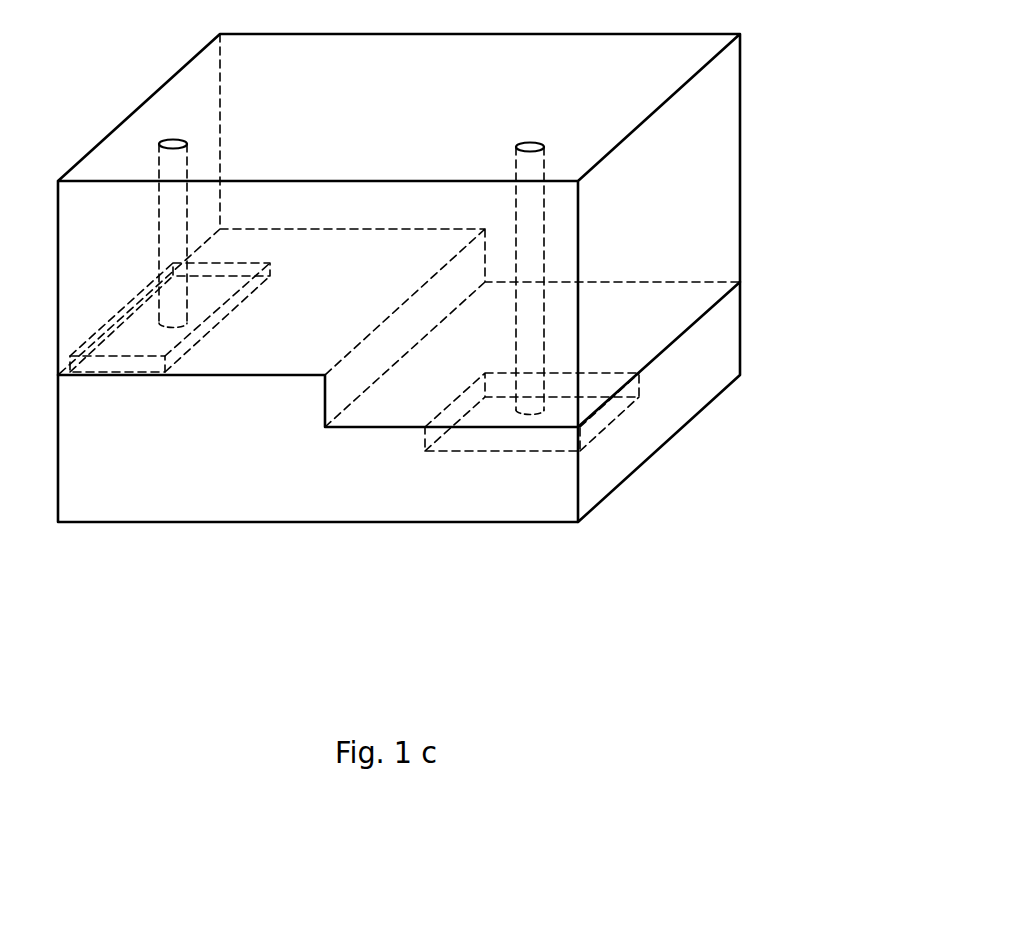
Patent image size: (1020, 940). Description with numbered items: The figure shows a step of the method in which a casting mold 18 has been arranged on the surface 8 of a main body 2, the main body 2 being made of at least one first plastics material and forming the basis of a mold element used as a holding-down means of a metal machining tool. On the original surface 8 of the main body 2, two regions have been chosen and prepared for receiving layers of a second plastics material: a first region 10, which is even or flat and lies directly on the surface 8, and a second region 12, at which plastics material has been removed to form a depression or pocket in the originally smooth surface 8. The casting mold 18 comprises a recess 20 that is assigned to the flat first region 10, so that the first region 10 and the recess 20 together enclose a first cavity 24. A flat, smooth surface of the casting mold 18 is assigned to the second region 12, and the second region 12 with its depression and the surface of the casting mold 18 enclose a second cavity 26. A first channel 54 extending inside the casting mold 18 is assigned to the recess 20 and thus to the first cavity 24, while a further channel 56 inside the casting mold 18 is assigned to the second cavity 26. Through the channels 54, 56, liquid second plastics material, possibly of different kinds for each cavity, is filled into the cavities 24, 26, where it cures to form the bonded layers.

The main body 2 is at (690, 453).
The surface 8 is at (408, 204).
The first region 10 is at (214, 325).
The second region 12 is at (480, 405).
The casting mold 18 is at (754, 140).
The recess 20 is at (222, 262).
The first cavity 24 is at (122, 360).
The second cavity 26 is at (489, 443).
The first channel 54 is at (172, 140).
The channel 56 is at (530, 143).